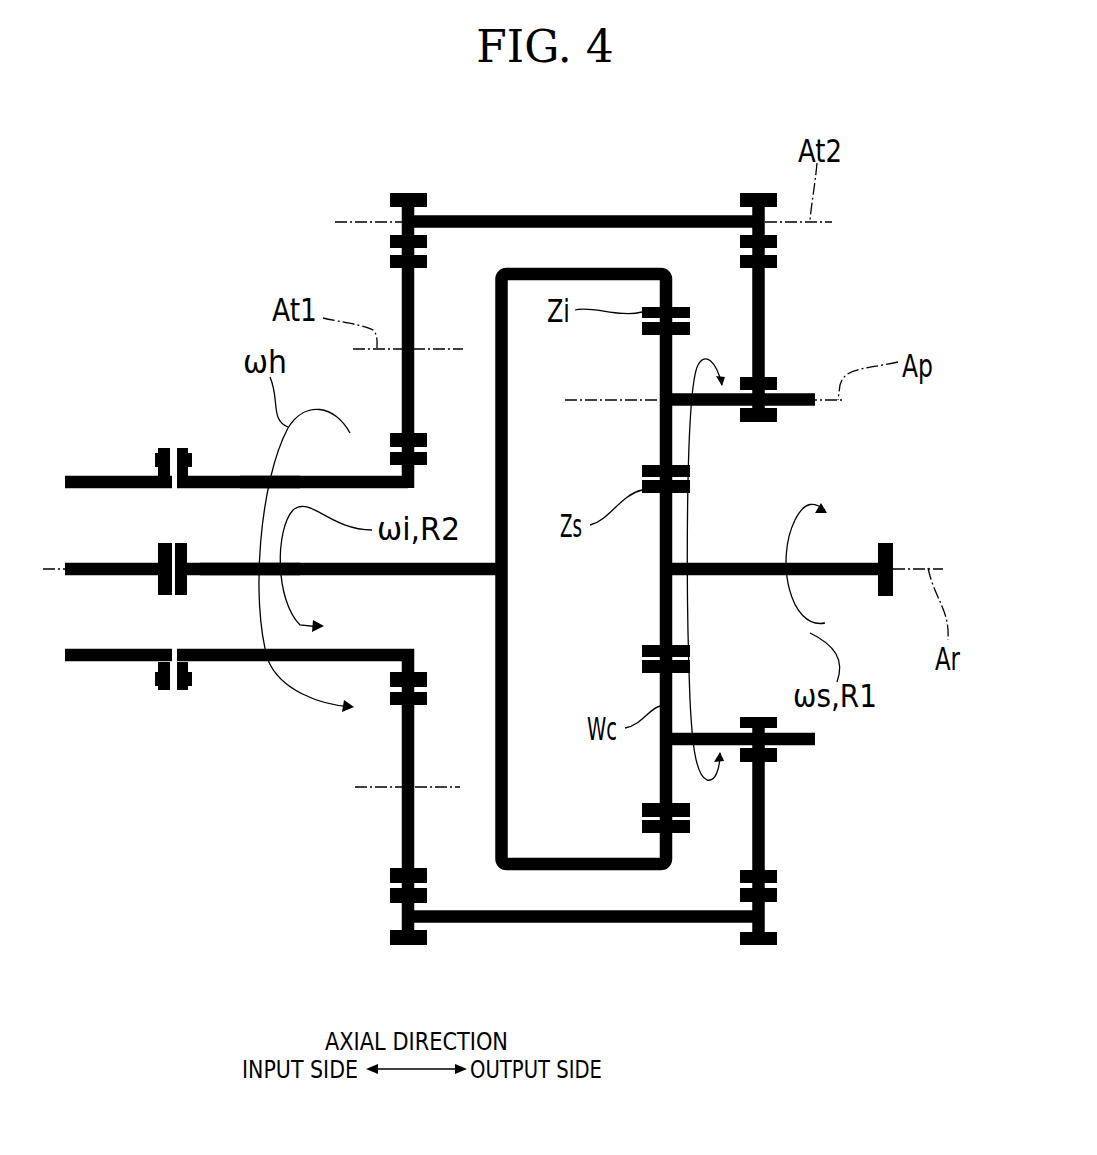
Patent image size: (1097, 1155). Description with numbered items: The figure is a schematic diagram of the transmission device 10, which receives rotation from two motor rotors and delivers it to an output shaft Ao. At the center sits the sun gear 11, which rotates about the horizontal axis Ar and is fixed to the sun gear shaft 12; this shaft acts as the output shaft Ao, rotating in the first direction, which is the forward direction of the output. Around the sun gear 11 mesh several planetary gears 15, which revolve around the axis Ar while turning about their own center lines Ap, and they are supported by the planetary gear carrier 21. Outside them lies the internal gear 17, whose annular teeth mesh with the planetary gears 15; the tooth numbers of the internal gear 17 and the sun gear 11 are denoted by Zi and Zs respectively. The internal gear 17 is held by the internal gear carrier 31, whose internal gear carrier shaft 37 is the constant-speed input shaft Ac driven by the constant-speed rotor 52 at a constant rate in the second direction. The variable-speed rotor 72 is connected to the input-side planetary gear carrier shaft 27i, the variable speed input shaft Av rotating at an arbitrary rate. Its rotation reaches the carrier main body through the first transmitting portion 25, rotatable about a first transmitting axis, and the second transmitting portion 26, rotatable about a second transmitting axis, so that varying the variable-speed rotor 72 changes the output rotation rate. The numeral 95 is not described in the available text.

The transmission device 10 is at (425, 143).
The sun gear 11 is at (673, 512).
The sun gear shaft 12 is at (740, 563).
The planetary gear 15 is at (672, 352).
The internal gear 17 is at (678, 307).
The planetary gear carrier 21 is at (765, 298).
The first transmitting portion 25 is at (400, 308).
The second transmitting portion 26 is at (583, 216).
The input-side planetary gear carrier shaft 27i is at (222, 477).
The internal gear carrier 31 is at (623, 870).
The internal gear carrier shaft 37 is at (235, 577).
The constant-speed rotor 52 is at (105, 577).
The variable-speed rotor 72 is at (261, 657).
The case 95 is at (110, 477).